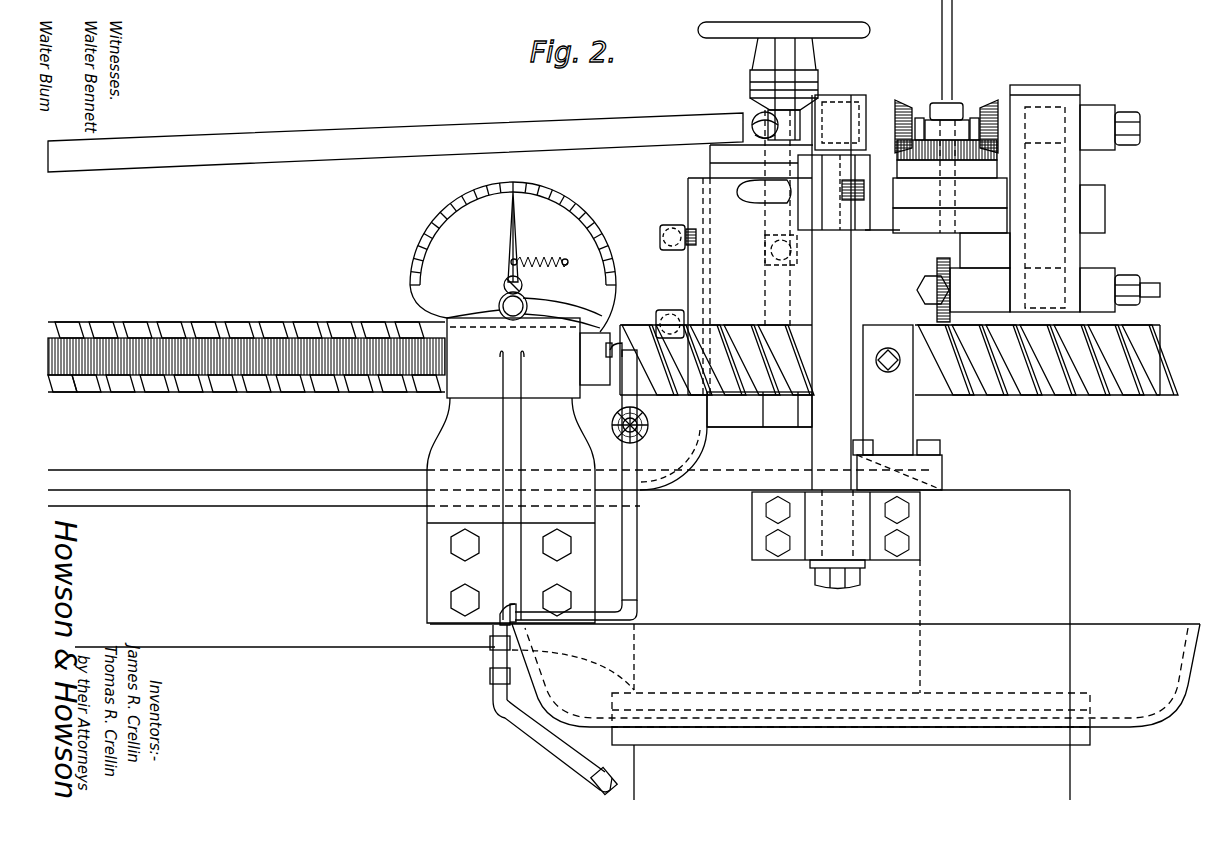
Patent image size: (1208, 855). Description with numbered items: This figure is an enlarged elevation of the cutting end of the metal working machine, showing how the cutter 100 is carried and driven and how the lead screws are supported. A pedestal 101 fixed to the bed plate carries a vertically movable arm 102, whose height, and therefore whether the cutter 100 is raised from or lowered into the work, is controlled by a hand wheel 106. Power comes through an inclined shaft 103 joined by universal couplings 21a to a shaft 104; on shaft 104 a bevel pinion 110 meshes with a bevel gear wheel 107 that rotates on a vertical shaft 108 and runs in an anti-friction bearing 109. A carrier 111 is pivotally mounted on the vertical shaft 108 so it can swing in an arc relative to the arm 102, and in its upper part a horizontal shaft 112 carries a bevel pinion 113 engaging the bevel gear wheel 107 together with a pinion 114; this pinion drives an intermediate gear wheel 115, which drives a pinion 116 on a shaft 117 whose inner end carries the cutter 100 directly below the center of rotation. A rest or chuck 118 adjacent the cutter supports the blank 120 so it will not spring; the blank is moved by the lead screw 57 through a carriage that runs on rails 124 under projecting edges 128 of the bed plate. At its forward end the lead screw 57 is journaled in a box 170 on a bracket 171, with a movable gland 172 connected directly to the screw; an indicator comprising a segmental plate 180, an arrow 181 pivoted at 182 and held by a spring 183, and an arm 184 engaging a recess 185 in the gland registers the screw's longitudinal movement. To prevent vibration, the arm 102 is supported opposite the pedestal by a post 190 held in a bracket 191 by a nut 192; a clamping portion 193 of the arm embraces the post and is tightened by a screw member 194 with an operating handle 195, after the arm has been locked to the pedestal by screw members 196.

The universal coupling 21a is at (752, 112).
The lead screw 57 is at (240, 388).
The cutter 100 is at (945, 318).
The pedestal 101 is at (726, 441).
The vertically movable arm 102 is at (847, 268).
The inclined shaft 103 is at (395, 142).
The shaft 104 is at (800, 118).
The hand wheel 106 is at (870, 30).
The bevel gear wheel 107 is at (968, 160).
The vertical shaft 108 is at (935, 210).
The anti-friction bearing 109 is at (878, 200).
The bevel pinion 110 is at (905, 108).
The carrier 111 is at (951, 237).
The horizontal shaft 112 is at (1095, 125).
The bevel pinion 113 is at (988, 108).
The pinion 114 is at (1046, 105).
The intermediate gear wheel 115 is at (1085, 206).
The pinion 116 is at (1027, 283).
The shaft 117 is at (1100, 282).
The rest or chuck 118 is at (890, 390).
The blank 120 is at (128, 390).
The rail 124 is at (296, 472).
The projecting edge 128 is at (196, 498).
The box 170 is at (513, 469).
The bracket 171 is at (511, 510).
The movable gland 172 is at (595, 359).
The segmental plate 180 is at (453, 247).
The arrow 181 is at (511, 212).
The pivot 182 is at (504, 287).
The spring 183 is at (541, 260).
The arm 184 is at (560, 302).
The recess 185 is at (602, 332).
The column or post 190 is at (839, 327).
The bracket 191 is at (836, 526).
The nut 192 is at (833, 585).
The clamping portion 193 is at (833, 230).
The screw member 194 is at (852, 180).
The operating handle 195 is at (745, 188).
The screw member 196 is at (660, 237).